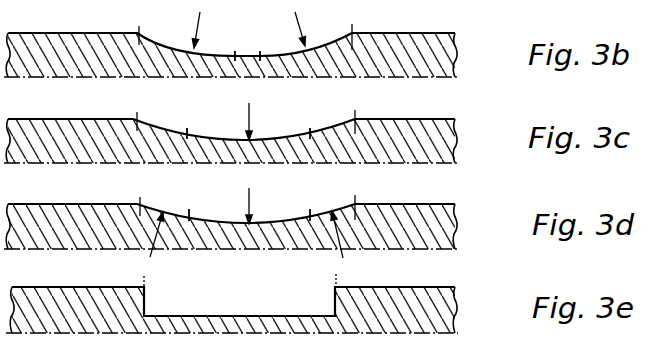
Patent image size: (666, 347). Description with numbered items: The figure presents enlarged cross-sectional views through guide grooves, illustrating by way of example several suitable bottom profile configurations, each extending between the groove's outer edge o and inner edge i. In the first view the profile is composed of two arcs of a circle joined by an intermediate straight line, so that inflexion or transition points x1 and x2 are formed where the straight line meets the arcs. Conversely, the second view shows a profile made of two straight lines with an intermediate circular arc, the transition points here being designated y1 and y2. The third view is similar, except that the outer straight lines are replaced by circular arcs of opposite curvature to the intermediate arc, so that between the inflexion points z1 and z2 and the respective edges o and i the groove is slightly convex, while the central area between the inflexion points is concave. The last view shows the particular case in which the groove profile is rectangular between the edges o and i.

In FIG. 3B, the outer edge of the groove o is at (132, 30).
In FIG. 3C, the outer edge of the groove o is at (131, 116).
In FIG. 3D, the outer edge of the groove o is at (134, 201).
In FIG. 3E, the outer edge of the groove o is at (136, 281).
In FIG. 3B, the inner edge of the groove i is at (356, 32).
In FIG. 3C, the inner edge of the groove i is at (359, 116).
In FIG. 3D, the inner edge of the groove i is at (359, 202).
In FIG. 3E, the inner edge of the groove i is at (342, 280).
In FIG. 3B, the inflexion or transition point x1 is at (235, 59).
In FIG. 3B, the inflexion or transition point x2 is at (260, 59).
In FIG. 3C, the transition point y1 is at (188, 137).
In FIG. 3C, the transition point y2 is at (312, 137).
In FIG. 3D, the inflexion point z1 is at (190, 219).
In FIG. 3D, the inflexion point z2 is at (311, 219).